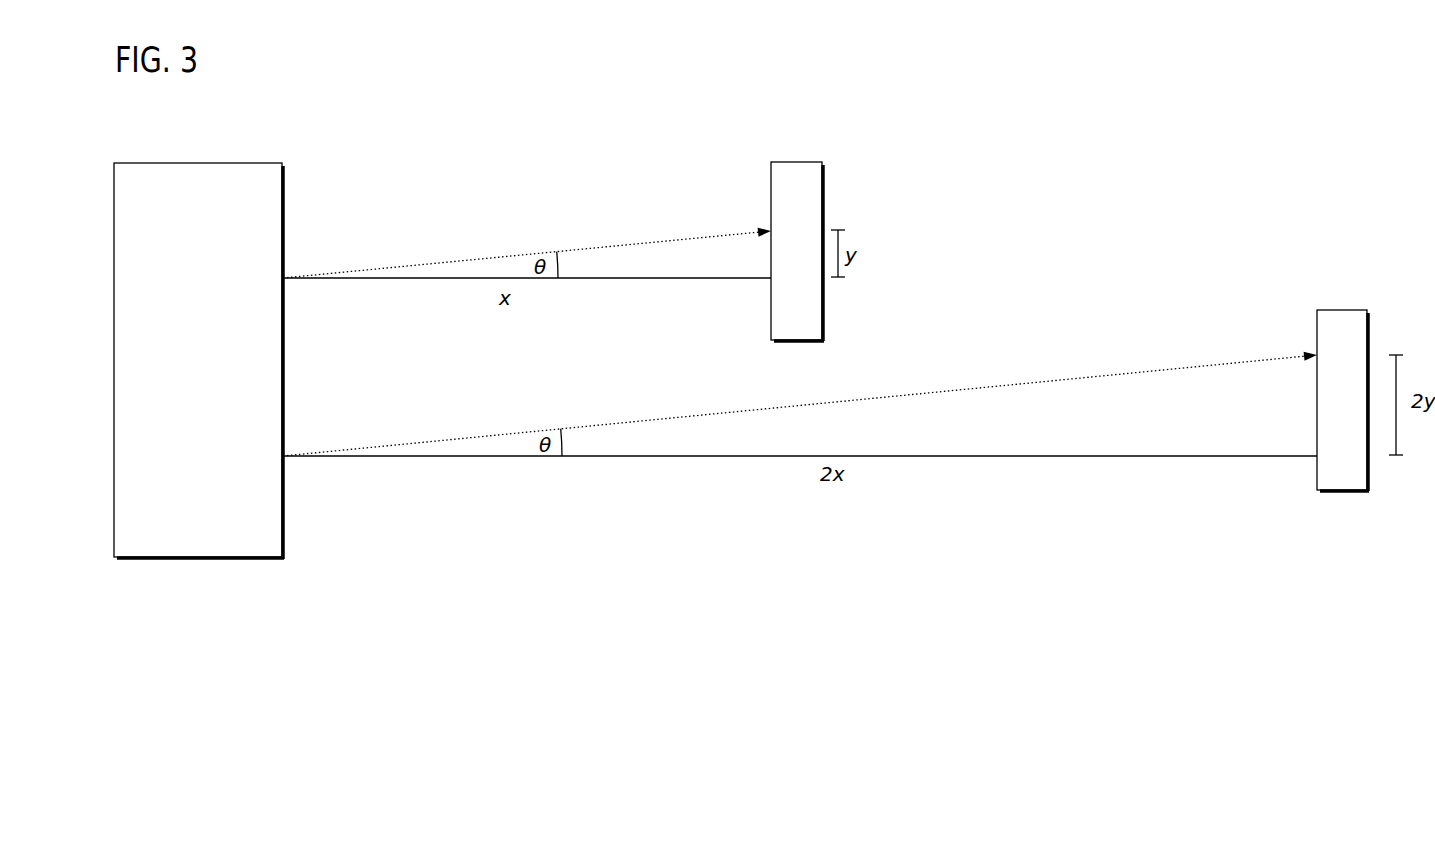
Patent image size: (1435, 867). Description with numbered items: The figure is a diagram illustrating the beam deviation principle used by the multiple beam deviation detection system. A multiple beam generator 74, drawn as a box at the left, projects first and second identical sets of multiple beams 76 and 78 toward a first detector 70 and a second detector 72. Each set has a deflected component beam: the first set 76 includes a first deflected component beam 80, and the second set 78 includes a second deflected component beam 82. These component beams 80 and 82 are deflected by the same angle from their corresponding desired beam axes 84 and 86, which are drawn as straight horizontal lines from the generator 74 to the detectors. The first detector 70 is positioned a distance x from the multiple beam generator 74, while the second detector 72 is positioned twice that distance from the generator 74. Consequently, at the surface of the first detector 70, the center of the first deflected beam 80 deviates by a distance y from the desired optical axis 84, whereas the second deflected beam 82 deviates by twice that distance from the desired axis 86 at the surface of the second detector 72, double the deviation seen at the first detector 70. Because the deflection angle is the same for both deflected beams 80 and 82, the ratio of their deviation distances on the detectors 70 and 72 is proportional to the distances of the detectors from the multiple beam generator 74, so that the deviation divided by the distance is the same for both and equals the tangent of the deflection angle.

The first detector 70 is at (797, 162).
The second detector 72 is at (1337, 310).
The multiple beam generator 74 is at (233, 162).
The first set of multiple beams 76 is at (527, 244).
The second set of multiple beams 78 is at (800, 403).
The first deflected component beam 80 is at (637, 243).
The second deflected component beam 82 is at (637, 422).
The first desired beam axis 84 is at (637, 280).
The second desired beam axis 86 is at (637, 457).